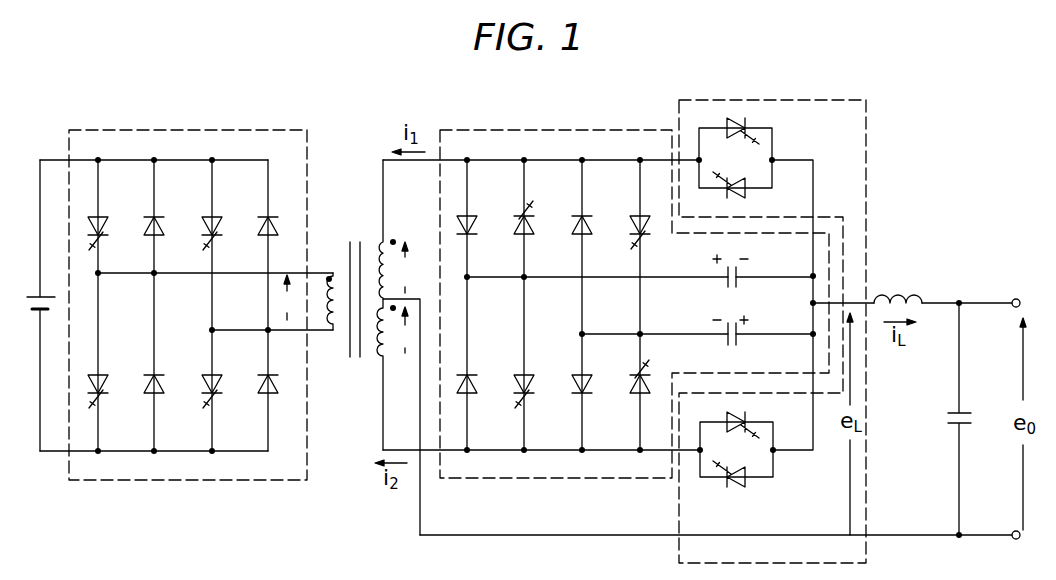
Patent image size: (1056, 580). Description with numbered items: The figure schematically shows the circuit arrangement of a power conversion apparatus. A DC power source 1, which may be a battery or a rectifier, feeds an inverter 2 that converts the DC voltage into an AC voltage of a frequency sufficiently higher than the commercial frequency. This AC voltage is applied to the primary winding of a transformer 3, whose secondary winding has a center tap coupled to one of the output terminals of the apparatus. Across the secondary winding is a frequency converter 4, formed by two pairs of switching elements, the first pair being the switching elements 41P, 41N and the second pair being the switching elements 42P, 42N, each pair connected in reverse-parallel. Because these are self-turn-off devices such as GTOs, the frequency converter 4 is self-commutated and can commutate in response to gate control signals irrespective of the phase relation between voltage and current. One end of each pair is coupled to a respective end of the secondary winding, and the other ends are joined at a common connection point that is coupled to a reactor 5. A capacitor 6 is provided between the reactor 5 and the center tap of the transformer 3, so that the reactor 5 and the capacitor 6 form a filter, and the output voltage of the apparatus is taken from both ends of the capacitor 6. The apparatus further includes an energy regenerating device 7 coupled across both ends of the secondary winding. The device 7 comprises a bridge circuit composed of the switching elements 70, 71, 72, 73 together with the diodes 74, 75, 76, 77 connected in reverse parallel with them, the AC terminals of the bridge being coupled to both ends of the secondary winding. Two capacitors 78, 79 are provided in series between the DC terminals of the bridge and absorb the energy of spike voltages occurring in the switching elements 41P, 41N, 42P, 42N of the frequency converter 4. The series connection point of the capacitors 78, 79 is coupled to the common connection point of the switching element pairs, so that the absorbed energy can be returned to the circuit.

The DC power source 1 is at (33, 296).
The inverter 2 is at (190, 107).
The transformer 3 is at (351, 229).
The frequency converter 4 is at (772, 312).
The reactor 5 is at (906, 292).
The capacitor 6 is at (973, 415).
The energy regenerating device 7 is at (634, 280).
The switching element 41P is at (748, 123).
The switching element 41N is at (742, 192).
The switching element 42N is at (745, 414).
The switching element 42P is at (746, 485).
The switching element 70 is at (530, 224).
The switching element 71 is at (530, 383).
The switching element 72 is at (646, 224).
The switching element 73 is at (646, 385).
The diode 74 is at (473, 222).
The diode 75 is at (473, 383).
The diode 76 is at (588, 222).
The diode 77 is at (588, 382).
The capacitor 78 is at (730, 263).
The capacitor 79 is at (732, 347).